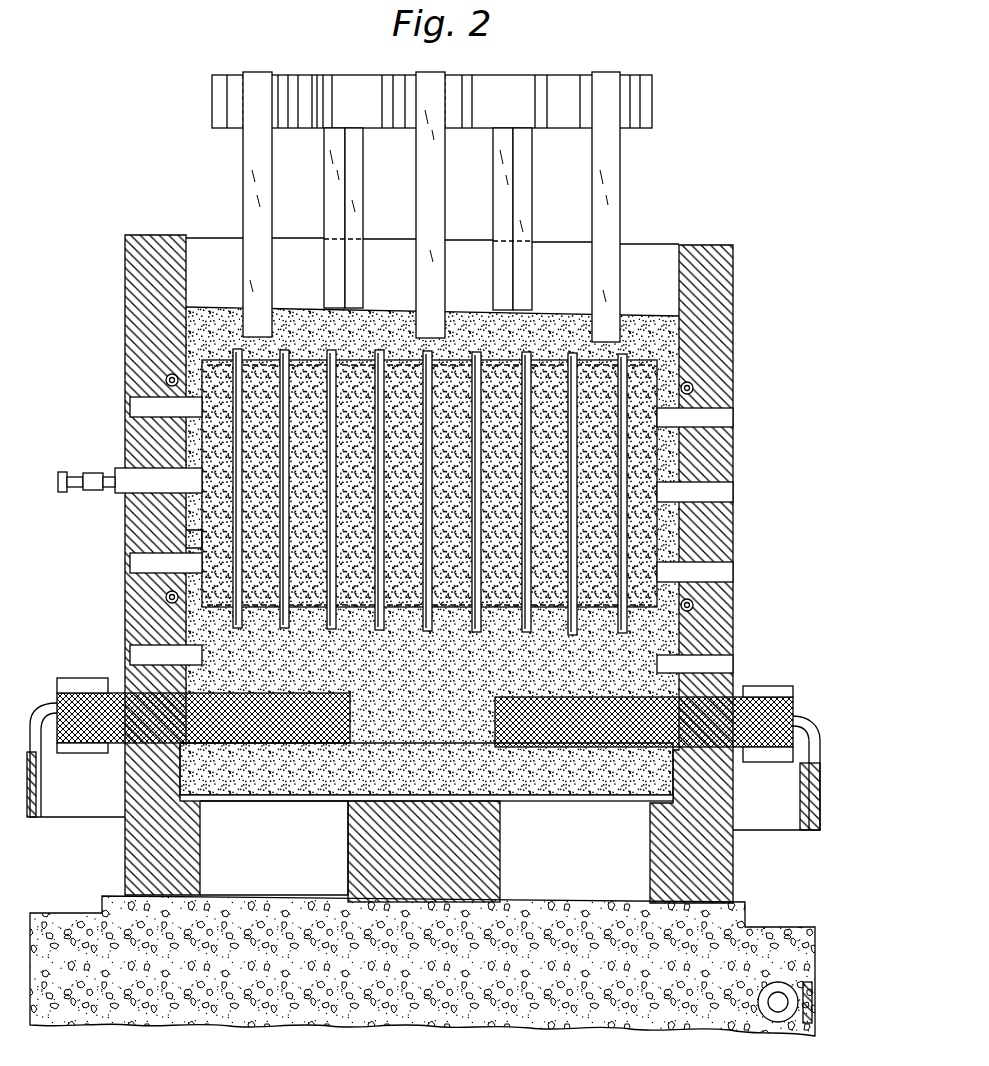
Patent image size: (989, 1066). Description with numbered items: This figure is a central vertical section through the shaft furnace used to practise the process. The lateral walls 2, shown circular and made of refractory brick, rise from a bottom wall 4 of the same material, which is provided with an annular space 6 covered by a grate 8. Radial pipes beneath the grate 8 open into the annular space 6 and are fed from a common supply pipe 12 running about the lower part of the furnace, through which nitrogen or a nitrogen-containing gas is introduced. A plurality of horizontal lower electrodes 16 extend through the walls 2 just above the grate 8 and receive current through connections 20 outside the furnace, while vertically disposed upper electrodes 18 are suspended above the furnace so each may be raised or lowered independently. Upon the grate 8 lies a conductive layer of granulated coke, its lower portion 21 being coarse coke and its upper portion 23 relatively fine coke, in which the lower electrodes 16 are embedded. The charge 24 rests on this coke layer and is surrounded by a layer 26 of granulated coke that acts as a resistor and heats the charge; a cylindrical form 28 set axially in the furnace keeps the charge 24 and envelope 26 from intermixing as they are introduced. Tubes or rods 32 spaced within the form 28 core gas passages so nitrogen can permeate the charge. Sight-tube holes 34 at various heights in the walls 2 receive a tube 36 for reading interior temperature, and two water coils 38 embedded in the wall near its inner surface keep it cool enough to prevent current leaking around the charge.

The walls 2 is at (735, 320).
The bottom wall 4 is at (352, 858).
The annular space 6 is at (222, 858).
The grate 8 is at (285, 801).
The common supply pipe 12 is at (796, 1025).
The lower electrodes 16 is at (120, 695).
The upper electrodes 18 is at (268, 165).
The connections 20 is at (53, 805).
The lower portion of the layer 21 is at (203, 765).
The upper portion of the layer 23 is at (265, 665).
The charge 24 is at (600, 540).
The layer 26 is at (186, 450).
The cylindrical form 28 is at (200, 540).
The tubes or rods 32 is at (527, 352).
The sight-tube holes 34 is at (150, 407).
The tube 36 is at (120, 491).
The water coils 38 is at (166, 380).